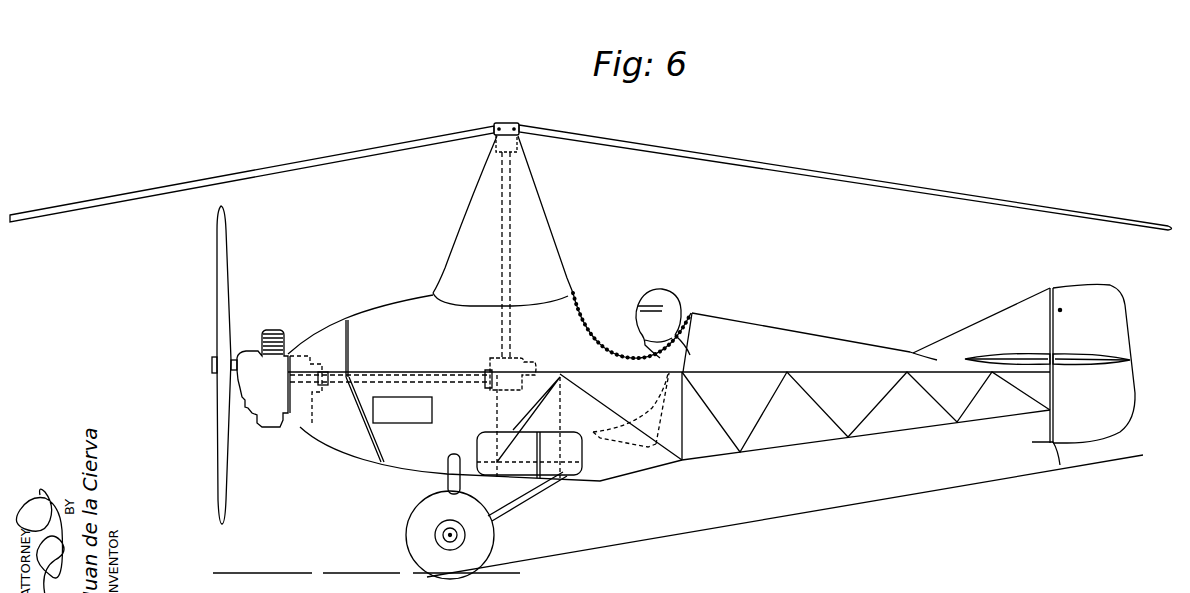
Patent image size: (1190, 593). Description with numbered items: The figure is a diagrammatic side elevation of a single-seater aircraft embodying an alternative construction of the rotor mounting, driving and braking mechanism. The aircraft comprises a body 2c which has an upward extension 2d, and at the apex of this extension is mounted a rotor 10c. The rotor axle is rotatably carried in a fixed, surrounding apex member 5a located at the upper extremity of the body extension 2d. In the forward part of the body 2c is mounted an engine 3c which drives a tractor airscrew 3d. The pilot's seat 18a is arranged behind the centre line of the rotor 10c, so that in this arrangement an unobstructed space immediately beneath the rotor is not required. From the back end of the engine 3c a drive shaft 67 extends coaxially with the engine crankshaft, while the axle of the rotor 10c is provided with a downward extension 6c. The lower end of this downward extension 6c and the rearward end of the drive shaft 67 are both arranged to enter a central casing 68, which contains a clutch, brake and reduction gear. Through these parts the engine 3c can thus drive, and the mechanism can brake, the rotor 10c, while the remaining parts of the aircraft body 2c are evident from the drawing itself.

The rotor 10c is at (322, 158).
The apex member 5a is at (497, 143).
The upward extension 2d is at (538, 223).
The downward extension 6c is at (507, 288).
The central casing 68 is at (524, 361).
The drive shaft 67 is at (397, 380).
The body 2c is at (418, 320).
The tractor airscrew 3d is at (220, 410).
The engine 3c is at (272, 407).
The pilot's seat 18a is at (660, 427).